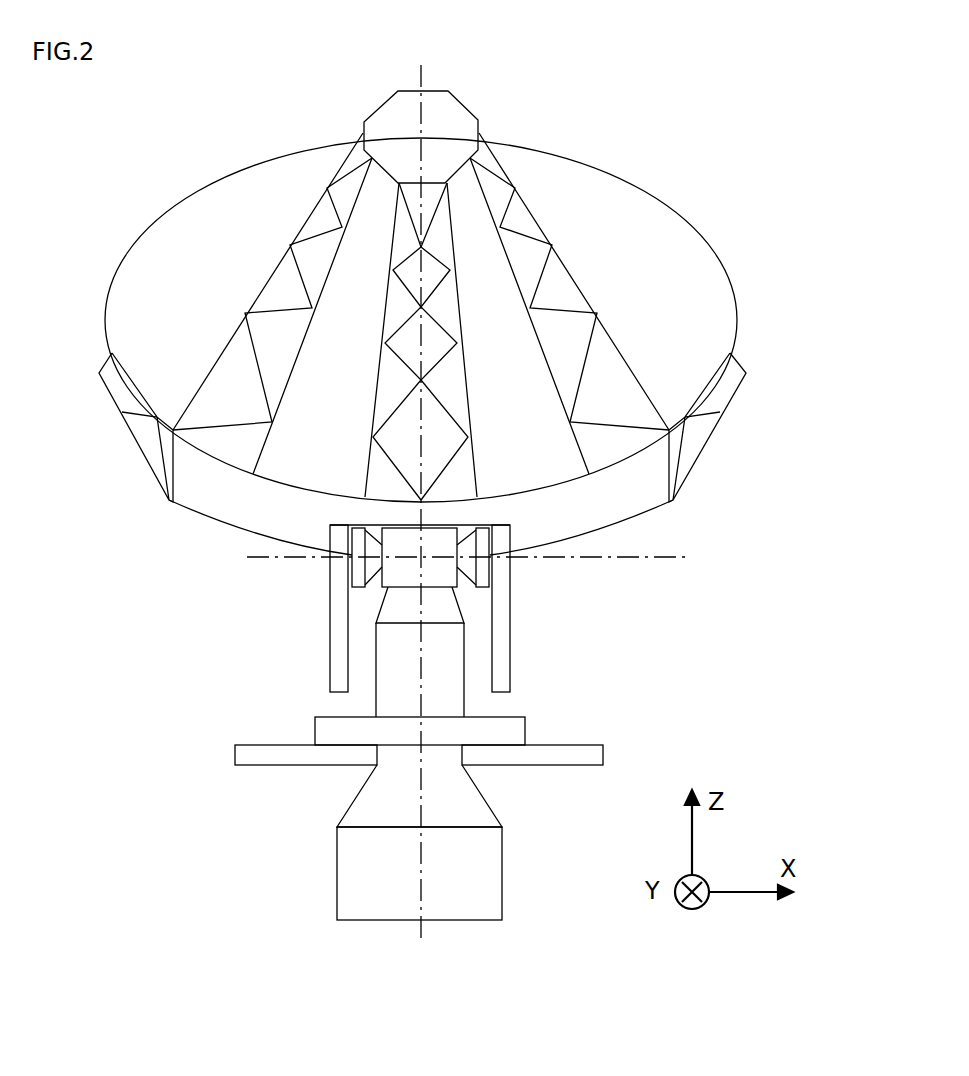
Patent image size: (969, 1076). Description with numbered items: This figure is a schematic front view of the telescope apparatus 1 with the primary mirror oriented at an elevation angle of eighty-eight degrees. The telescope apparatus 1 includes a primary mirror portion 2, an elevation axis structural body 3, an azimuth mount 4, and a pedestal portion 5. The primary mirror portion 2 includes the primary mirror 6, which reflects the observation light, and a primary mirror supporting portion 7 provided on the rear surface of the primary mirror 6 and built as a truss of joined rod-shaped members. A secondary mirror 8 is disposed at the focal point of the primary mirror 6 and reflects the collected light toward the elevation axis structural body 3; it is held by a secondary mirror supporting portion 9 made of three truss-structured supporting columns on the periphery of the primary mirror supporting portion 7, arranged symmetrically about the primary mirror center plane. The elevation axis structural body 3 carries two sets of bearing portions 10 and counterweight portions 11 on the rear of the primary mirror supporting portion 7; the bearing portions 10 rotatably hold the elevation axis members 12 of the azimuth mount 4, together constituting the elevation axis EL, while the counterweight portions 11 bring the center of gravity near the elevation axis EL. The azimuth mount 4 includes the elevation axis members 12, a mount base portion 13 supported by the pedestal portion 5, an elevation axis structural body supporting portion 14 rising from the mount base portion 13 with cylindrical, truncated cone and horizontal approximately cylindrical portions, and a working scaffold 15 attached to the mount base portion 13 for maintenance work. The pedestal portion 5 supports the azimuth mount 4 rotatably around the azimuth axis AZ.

The telescope apparatus 1 is at (482, 501).
The primary mirror portion 2 is at (482, 323).
The elevation axis structural body 3 is at (430, 608).
The azimuth mount 4 is at (380, 694).
The pedestal portion 5 is at (448, 808).
The primary mirror 6 is at (678, 330).
The primary mirror supporting portion 7 is at (460, 427).
The secondary mirror 8 is at (458, 148).
The secondary mirror supporting portion 9 is at (550, 248).
The bearing portion 10 is at (488, 560).
The counterweight portion 11 is at (503, 617).
The elevation axis member 12 is at (350, 548).
The mount base portion 13 is at (325, 737).
The elevation axis structural body supporting portion 14 is at (390, 707).
The working scaffold 15 is at (385, 745).
The azimuth axis AZ is at (427, 82).
The elevation axis EL is at (468, 581).